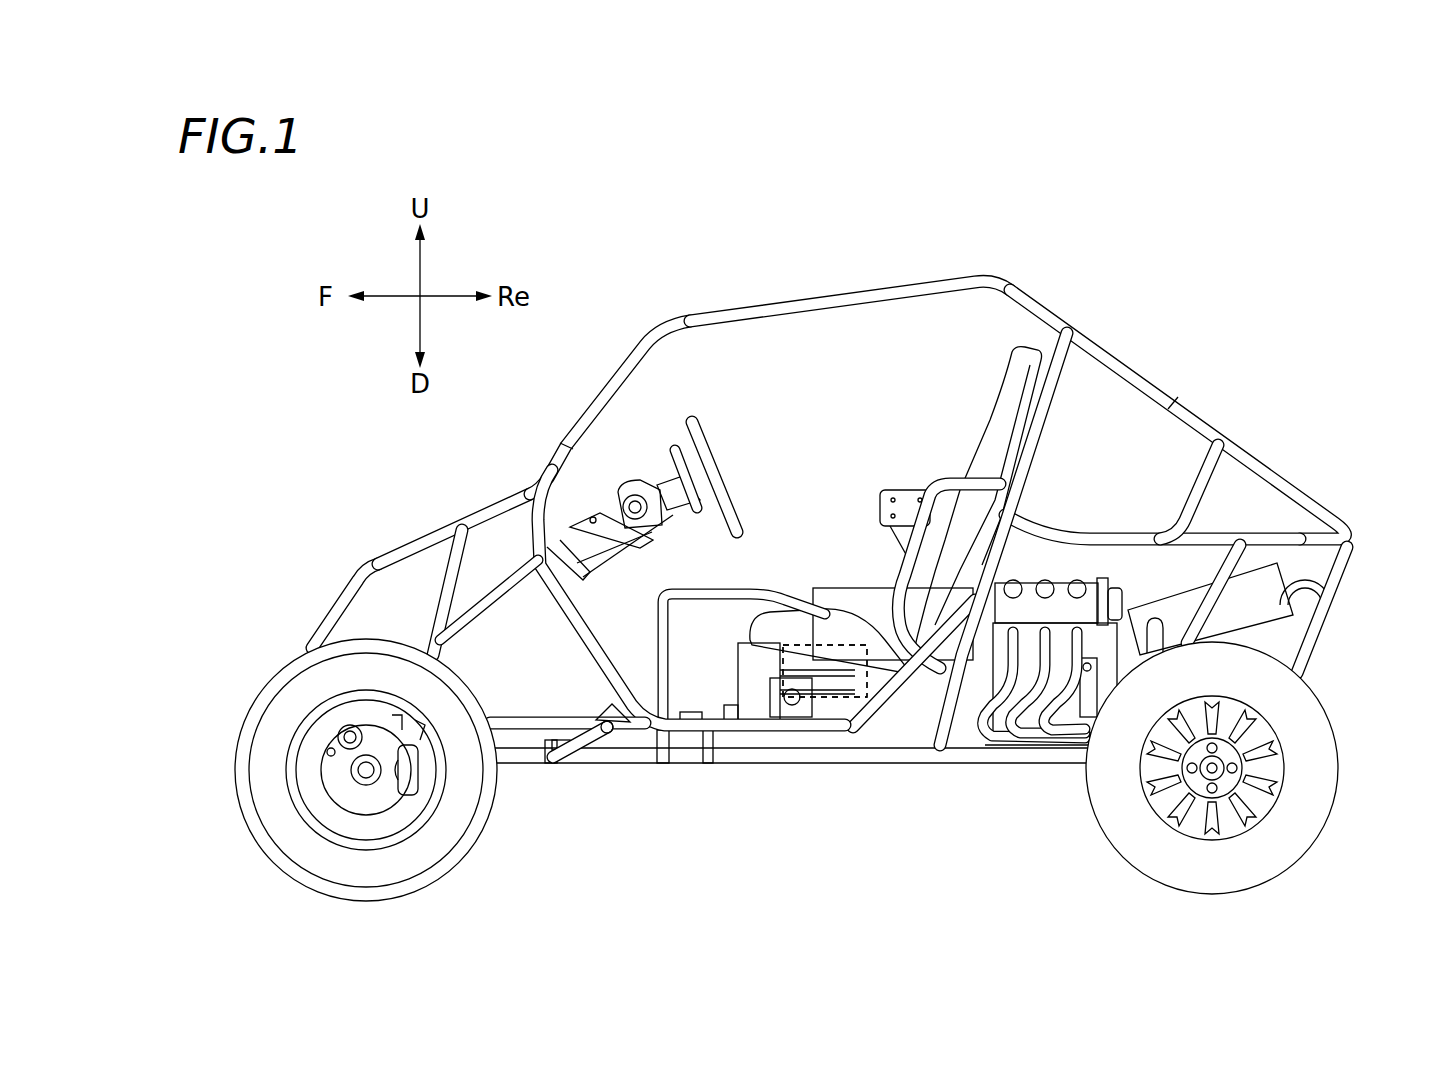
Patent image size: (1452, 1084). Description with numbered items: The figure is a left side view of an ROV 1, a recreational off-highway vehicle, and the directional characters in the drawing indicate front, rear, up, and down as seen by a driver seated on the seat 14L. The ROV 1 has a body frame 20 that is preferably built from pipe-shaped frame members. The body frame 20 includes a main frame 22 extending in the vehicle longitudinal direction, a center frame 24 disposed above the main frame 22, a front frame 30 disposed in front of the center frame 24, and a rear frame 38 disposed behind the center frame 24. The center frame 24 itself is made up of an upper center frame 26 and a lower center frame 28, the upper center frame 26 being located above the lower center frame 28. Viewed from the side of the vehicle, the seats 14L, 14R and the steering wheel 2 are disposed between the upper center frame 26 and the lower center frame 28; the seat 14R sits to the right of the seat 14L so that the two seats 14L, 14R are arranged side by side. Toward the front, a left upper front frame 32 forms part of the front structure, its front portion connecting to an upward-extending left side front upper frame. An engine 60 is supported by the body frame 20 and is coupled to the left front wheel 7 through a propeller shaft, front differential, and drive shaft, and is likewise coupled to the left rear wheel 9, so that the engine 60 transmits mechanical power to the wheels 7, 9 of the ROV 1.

The ROV 1 is at (1260, 339).
The steering wheel 2 is at (697, 427).
The left front wheel 7 is at (242, 817).
The left rear wheel 9 is at (1327, 827).
The seat 14L is at (850, 637).
The seat 14R is at (825, 671).
The body frame 20 is at (1148, 352).
The main frame 22 is at (742, 757).
The center frame 24 is at (636, 331).
The upper center frame 26 is at (790, 297).
The lower center frame 28 is at (650, 723).
The front frame 30 is at (340, 581).
The left upper front frame 32 is at (397, 552).
The rear frame 38 is at (1270, 456).
The engine 60 is at (1120, 578).